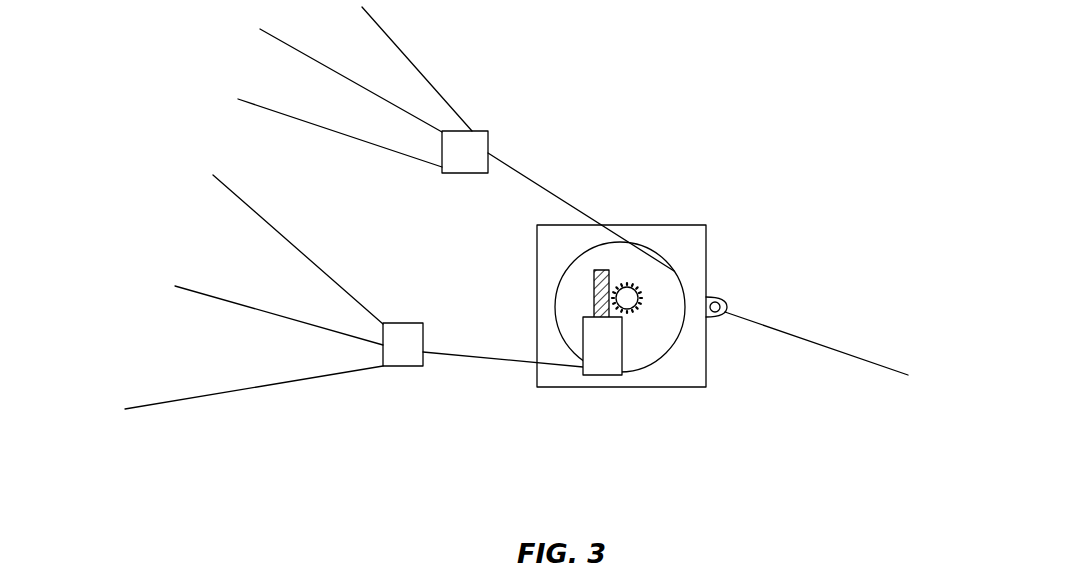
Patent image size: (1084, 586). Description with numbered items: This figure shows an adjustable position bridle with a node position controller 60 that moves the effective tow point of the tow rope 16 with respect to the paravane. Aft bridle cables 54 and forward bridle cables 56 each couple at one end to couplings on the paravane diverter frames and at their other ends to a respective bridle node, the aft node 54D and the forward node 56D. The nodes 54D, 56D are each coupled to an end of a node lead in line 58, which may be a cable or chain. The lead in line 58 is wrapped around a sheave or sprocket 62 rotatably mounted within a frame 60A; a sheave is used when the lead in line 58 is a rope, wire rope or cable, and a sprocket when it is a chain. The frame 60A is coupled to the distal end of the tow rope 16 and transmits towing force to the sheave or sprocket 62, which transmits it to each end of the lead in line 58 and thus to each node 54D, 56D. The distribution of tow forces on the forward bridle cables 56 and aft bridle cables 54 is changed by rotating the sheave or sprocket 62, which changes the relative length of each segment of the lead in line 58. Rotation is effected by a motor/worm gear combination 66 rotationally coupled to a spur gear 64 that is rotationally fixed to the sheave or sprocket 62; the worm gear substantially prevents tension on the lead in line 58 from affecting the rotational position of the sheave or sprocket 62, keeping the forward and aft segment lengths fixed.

The tow rope 16 is at (797, 337).
The aft bridle cables 54 is at (315, 60).
The aft node 54D is at (467, 173).
The forward bridle cables 56 is at (255, 207).
The forward node 56D is at (400, 366).
The node lead in line 58 is at (545, 187).
The node position controller 60 is at (448, 467).
The frame 60A is at (695, 290).
The sheave or sprocket 62 is at (650, 245).
The spur gear 64 is at (643, 300).
The motor/worm gear combination 66 is at (583, 337).